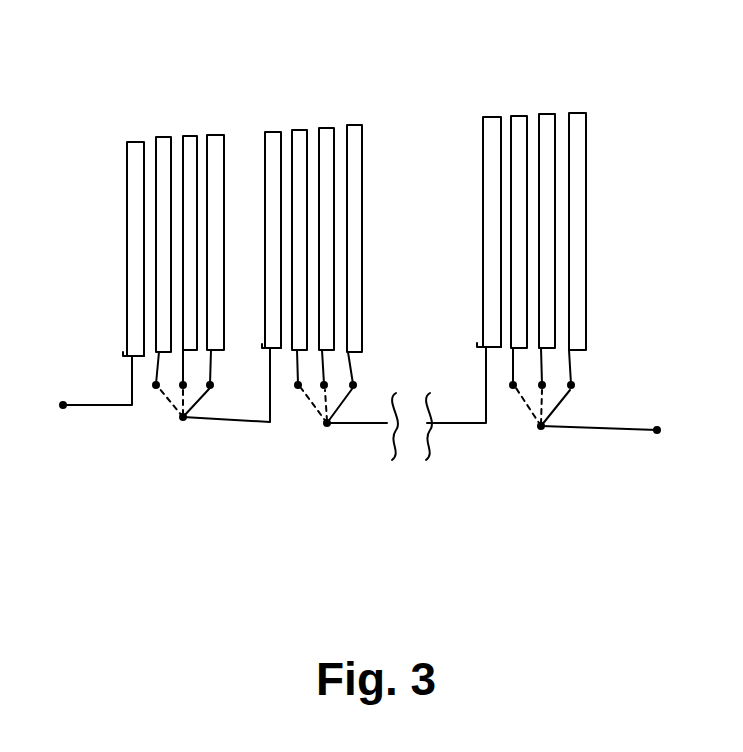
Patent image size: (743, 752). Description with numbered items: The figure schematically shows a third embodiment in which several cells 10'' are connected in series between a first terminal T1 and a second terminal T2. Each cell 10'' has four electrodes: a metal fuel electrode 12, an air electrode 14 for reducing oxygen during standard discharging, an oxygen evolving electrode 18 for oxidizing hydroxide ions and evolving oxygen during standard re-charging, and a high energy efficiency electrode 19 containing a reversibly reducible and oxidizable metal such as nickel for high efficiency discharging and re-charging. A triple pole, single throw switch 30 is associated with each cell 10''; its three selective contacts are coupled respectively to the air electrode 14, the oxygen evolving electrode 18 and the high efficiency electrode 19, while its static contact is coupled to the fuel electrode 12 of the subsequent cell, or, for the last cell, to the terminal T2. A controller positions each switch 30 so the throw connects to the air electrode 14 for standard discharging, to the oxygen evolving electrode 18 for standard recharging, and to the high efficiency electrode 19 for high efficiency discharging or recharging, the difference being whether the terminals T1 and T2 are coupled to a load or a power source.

The cell 10'' is at (328, 49).
The metal fuel electrode 12 is at (127, 190).
The air electrode 14 is at (221, 152).
The oxygen evolving electrode 18 is at (190, 136).
The high energy efficiency electrode 19 is at (163, 137).
The switch 30 is at (174, 448).
The terminal T1 is at (46, 414).
The terminal T2 is at (682, 431).